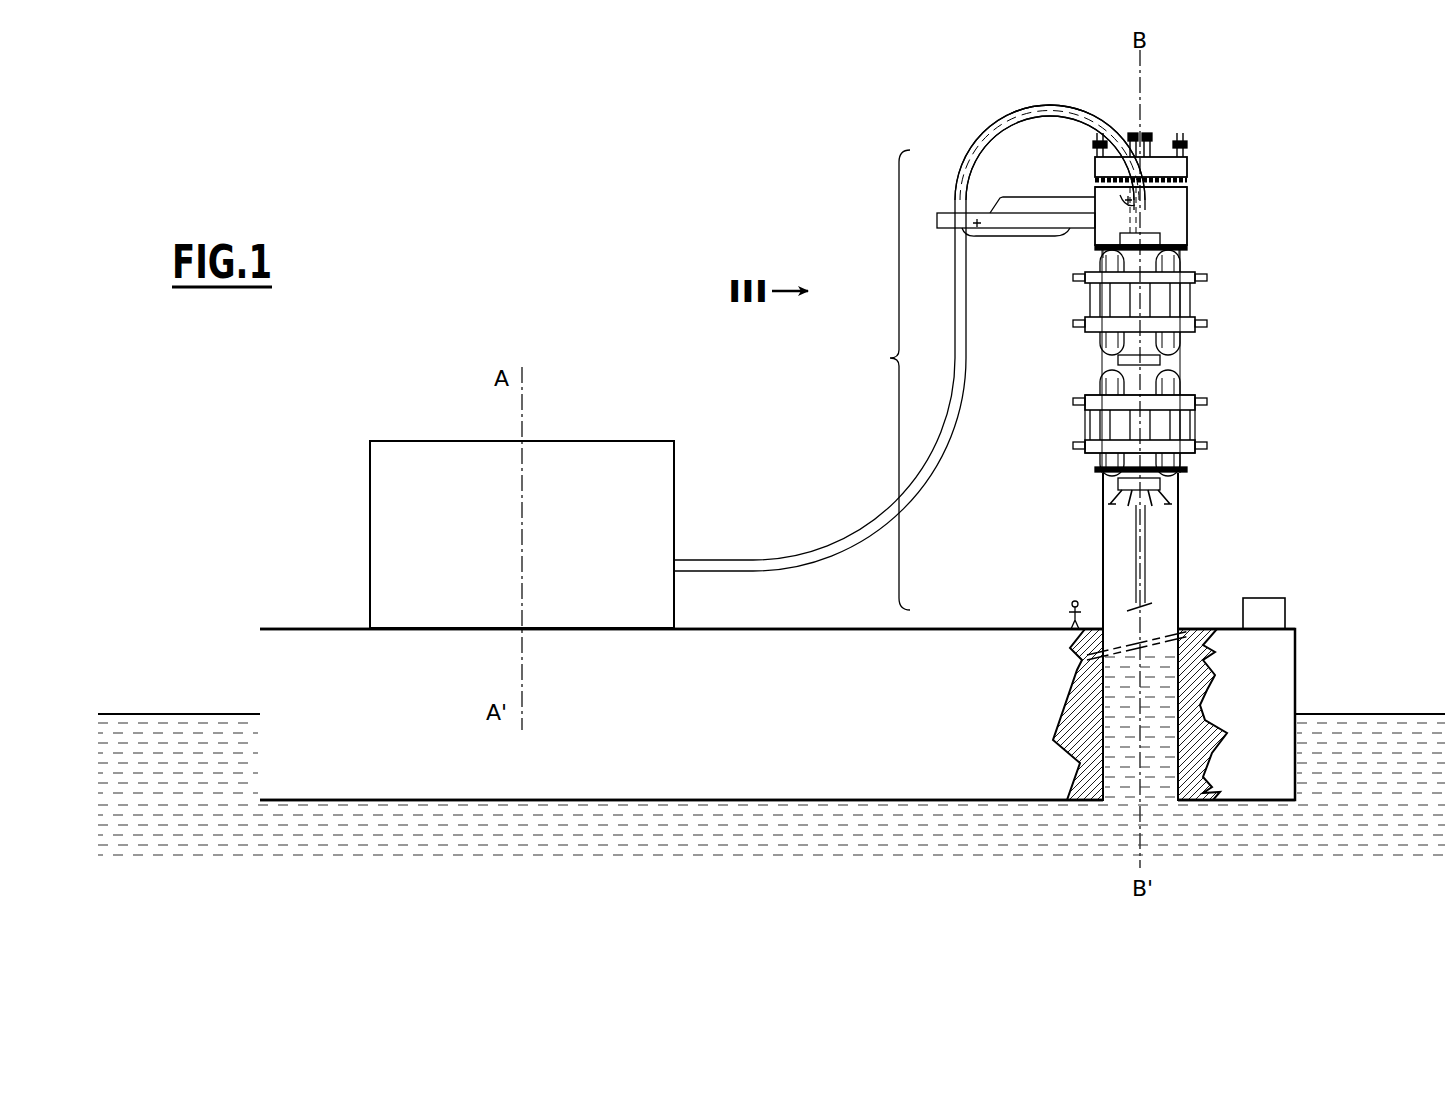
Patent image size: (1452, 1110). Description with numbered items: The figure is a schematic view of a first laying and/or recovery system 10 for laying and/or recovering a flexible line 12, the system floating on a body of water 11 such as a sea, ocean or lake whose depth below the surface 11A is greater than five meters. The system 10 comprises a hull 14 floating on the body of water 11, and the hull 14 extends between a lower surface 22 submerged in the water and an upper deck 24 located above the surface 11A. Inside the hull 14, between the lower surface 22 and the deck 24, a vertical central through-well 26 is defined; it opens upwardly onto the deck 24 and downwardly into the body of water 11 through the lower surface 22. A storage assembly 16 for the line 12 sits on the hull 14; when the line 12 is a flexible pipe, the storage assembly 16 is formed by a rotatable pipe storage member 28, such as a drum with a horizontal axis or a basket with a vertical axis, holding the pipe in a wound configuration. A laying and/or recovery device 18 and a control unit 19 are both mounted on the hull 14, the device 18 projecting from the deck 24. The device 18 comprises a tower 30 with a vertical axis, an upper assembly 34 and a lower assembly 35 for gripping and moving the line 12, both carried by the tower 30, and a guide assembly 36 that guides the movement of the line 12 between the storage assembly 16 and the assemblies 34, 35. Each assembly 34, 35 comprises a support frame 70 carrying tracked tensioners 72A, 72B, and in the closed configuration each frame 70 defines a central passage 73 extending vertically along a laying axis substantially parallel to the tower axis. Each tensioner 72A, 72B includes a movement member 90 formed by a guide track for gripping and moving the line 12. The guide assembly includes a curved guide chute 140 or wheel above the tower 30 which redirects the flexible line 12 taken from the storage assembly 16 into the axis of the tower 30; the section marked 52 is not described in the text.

The laying and/or recovery system 10 is at (463, 142).
The body of water 11 is at (186, 775).
The surface of the body of water 11A is at (130, 712).
The flexible line 12 is at (783, 536).
The hull 14 is at (1270, 680).
The storage assembly 16 is at (416, 428).
The laying and/or recovery device 18 is at (1300, 270).
The control unit 19 is at (1278, 598).
The lower surface 22 is at (745, 800).
The upper deck 24 is at (828, 629).
The central through-well 26 is at (1122, 760).
The rotatable pipe storage member 28 is at (370, 512).
The tower 30 is at (1182, 576).
The upper assembly for gripping and moving the line 34 is at (1190, 248).
The lower assembly for gripping and moving the line 35 is at (1192, 395).
The guide assembly 36 is at (956, 124).
The hose vertical section 52 is at (884, 380).
The support frame 70 is at (1085, 301).
The tracked tensioner 72A is at (1195, 258).
The tracked tensioner 72B is at (1186, 465).
The central passage 73 is at (1155, 233).
The movement member 90 is at (1162, 482).
The curved guide chute 140 is at (1030, 105).